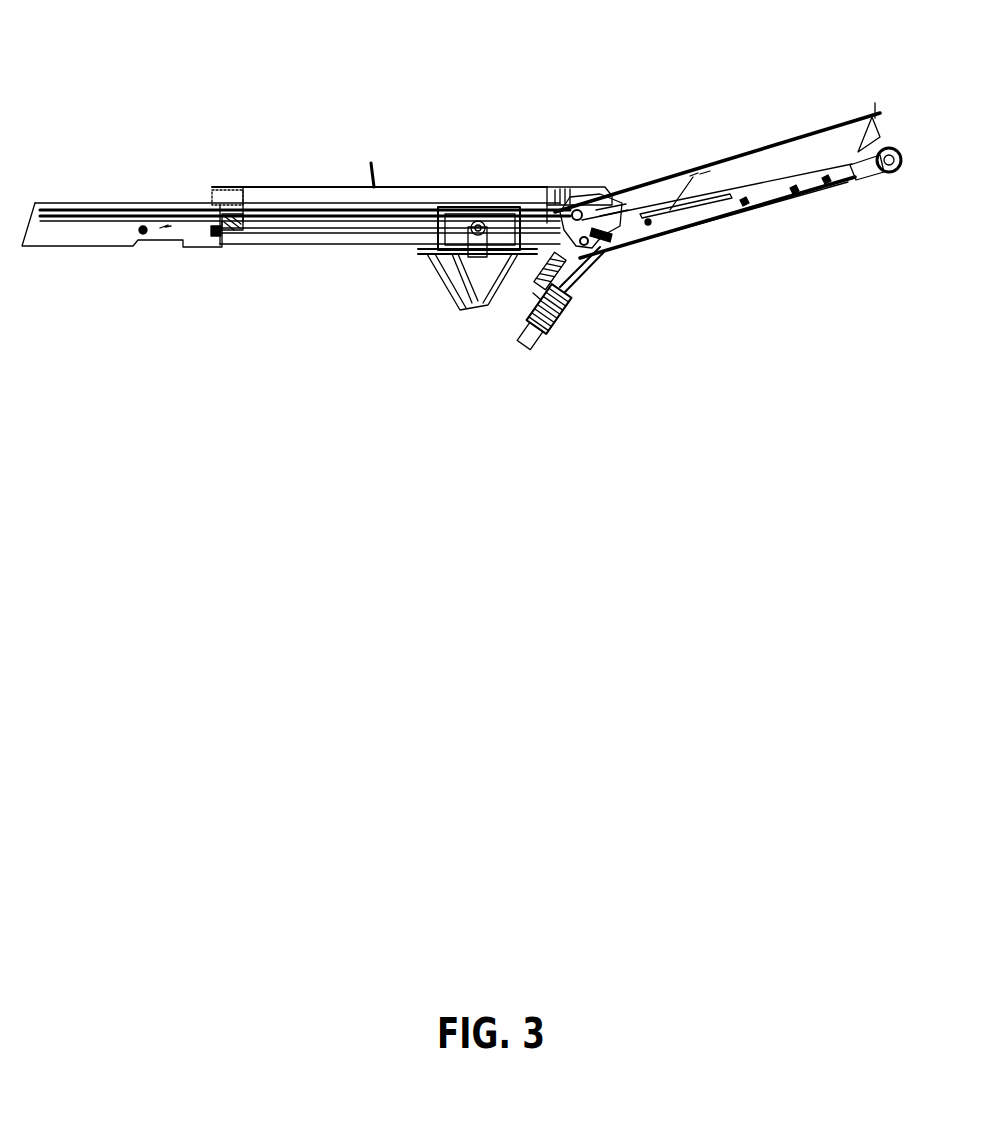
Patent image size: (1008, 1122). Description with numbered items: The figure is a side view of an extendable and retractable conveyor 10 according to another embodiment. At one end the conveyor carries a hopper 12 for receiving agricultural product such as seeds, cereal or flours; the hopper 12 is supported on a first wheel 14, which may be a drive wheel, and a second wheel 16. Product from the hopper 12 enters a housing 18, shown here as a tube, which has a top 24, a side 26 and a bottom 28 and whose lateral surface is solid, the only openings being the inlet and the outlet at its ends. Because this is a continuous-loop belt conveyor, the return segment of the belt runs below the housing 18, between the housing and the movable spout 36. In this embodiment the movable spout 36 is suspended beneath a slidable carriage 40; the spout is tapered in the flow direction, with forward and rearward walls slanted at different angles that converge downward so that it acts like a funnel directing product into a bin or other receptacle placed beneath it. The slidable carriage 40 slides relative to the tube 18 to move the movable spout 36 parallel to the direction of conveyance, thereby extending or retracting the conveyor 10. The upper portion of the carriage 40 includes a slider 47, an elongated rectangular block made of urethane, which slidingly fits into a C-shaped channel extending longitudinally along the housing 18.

The extendable and retractable conveyor 10 is at (638, 138).
The hopper 12 is at (740, 176).
The first wheel 14 is at (556, 330).
The second wheel 16 is at (895, 173).
The housing 18 is at (527, 197).
The top 24 is at (409, 185).
The side 26 is at (300, 222).
The bottom 28 is at (326, 250).
The movable spout 36 is at (445, 290).
The slidable carriage 40 is at (498, 207).
The slider 47 is at (455, 207).